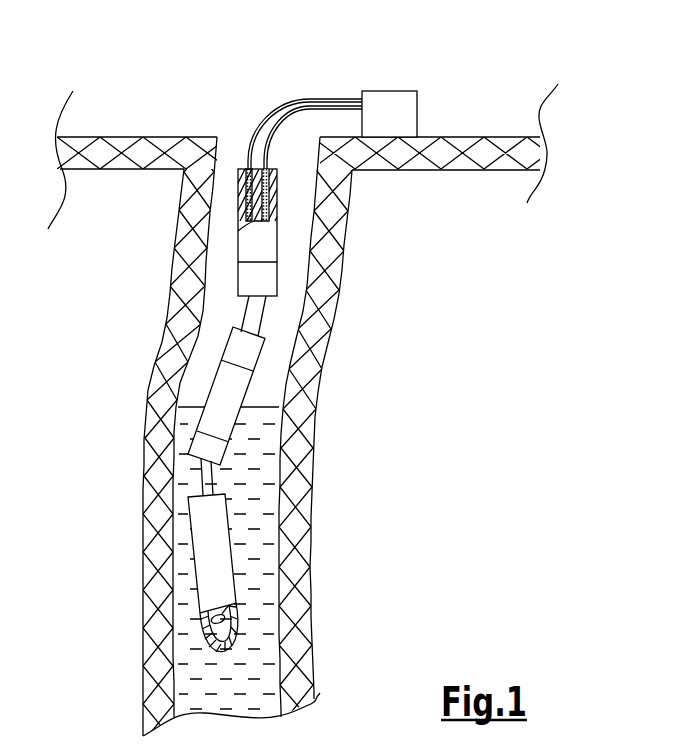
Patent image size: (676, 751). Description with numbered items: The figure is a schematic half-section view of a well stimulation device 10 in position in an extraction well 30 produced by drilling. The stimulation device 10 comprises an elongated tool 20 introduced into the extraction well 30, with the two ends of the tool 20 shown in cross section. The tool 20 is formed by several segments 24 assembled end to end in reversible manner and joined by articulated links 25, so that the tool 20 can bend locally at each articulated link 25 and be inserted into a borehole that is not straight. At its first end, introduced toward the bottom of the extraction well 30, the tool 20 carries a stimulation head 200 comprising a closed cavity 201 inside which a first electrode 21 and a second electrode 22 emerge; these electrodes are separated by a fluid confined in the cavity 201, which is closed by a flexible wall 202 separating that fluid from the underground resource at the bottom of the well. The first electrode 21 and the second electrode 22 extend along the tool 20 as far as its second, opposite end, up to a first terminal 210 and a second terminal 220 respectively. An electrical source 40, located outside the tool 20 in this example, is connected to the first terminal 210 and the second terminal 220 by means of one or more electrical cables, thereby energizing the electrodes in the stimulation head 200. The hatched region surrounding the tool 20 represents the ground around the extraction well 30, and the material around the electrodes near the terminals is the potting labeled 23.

The well stimulation device 10 is at (251, 84).
The tool 20 is at (289, 260).
The first electrode 21 is at (278, 198).
The second electrode 22 is at (247, 210).
The potting compound 23 is at (247, 190).
The segments 24 is at (240, 247).
The articulated links 25 is at (257, 313).
The extraction well 30 is at (289, 365).
The electrical source 40 is at (390, 105).
The stimulation head 200 is at (202, 628).
The closed cavity 201 is at (240, 637).
The flexible wall 202 is at (238, 630).
The first terminal 210 is at (277, 175).
The second terminal 220 is at (237, 171).